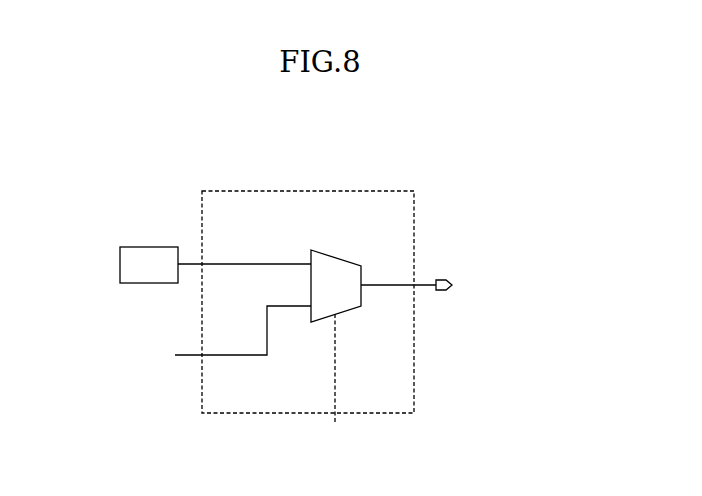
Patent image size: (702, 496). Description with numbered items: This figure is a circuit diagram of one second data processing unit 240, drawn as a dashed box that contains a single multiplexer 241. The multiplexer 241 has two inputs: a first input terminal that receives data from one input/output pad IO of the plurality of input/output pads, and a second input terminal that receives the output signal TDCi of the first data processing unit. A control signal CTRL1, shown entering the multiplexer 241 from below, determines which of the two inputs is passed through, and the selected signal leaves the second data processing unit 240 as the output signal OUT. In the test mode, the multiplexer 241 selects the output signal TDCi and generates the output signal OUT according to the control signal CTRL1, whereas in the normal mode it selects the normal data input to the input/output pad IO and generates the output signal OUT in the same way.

The second data processing unit 240 is at (319, 192).
The multiplexer 241 is at (325, 254).
The input/output pad IO is at (215, 265).
The output signal of the first data processing unit TDCi is at (216, 336).
The output signal OUT is at (430, 285).
The control signal CTRL1 is at (337, 381).